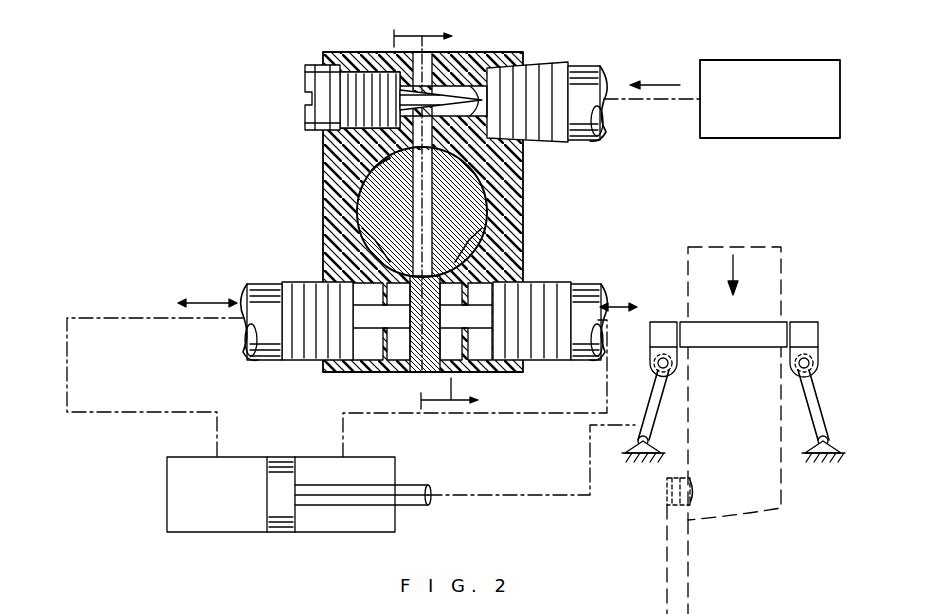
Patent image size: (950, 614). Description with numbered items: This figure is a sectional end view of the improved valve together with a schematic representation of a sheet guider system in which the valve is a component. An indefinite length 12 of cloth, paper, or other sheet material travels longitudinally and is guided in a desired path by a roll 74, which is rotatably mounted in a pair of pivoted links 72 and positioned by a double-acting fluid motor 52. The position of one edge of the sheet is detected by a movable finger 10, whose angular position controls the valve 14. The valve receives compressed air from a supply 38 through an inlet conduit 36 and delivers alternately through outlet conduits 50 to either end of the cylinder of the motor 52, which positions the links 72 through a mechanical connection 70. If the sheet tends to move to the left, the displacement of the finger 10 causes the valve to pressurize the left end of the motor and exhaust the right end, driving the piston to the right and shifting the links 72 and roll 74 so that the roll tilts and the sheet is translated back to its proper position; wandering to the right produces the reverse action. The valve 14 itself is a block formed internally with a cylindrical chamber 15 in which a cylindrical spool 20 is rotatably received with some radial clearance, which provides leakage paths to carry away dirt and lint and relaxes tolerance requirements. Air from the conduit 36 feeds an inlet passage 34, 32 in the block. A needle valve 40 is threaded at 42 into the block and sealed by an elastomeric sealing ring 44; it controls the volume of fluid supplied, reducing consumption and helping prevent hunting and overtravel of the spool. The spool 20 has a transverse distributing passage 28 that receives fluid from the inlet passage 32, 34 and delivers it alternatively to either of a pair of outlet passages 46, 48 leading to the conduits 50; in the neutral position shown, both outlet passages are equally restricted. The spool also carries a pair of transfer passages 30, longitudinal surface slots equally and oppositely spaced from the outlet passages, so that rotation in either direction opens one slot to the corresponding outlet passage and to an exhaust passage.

The movable finger 10 is at (678, 492).
The indefinite length of sheet material 12 is at (781, 300).
The valve 14 is at (327, 185).
The cylindrical chamber 15 is at (367, 183).
The cylindrical spool 20 is at (480, 222).
The transverse distributing passage 28 is at (428, 205).
The transfer passages 30 is at (367, 237).
The inlet passage 32 is at (505, 142).
The inlet passage 34 is at (460, 82).
The inlet conduit 36 is at (585, 85).
The air supply 38 is at (775, 138).
The needle valve 40 is at (412, 90).
The threaded connection 42 is at (373, 80).
The elastomeric sealing ring 44 is at (330, 70).
The outlet passage 46 is at (402, 335).
The outlet passage 48 is at (355, 310).
The outlet conduits 50 is at (267, 300).
The double-acting fluid motor 52 is at (275, 505).
The mechanical connection 70 is at (590, 428).
The pivoted links 72 is at (655, 385).
The roll 74 is at (707, 330).